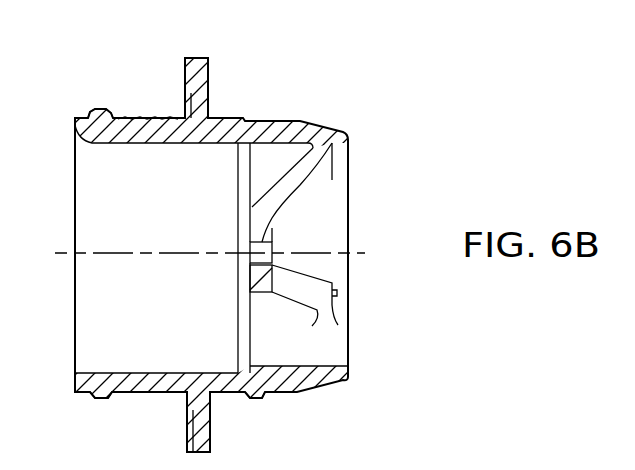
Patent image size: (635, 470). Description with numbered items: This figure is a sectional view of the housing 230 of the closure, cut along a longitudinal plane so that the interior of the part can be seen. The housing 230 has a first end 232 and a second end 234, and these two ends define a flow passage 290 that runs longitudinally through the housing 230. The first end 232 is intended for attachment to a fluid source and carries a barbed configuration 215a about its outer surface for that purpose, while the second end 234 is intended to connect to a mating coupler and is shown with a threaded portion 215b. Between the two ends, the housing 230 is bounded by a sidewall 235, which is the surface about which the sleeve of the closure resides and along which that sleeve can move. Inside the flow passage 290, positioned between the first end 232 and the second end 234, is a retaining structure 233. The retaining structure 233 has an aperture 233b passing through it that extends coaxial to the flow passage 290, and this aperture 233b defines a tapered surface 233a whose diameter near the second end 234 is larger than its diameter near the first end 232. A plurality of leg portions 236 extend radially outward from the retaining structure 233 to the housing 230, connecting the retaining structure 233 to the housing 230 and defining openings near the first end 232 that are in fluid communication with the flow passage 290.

The housing 230 is at (130, 87).
The first end 232 is at (340, 132).
The second end 234 is at (75, 119).
The sidewall 235 is at (100, 138).
The flow passage 290 is at (173, 211).
The retaining structure 233 is at (272, 232).
The tapered surface 233a is at (252, 248).
The aperture 233b is at (272, 245).
The leg portions 236 is at (323, 175).
The barbed configuration 215a is at (270, 398).
The threaded portion 215b is at (100, 398).